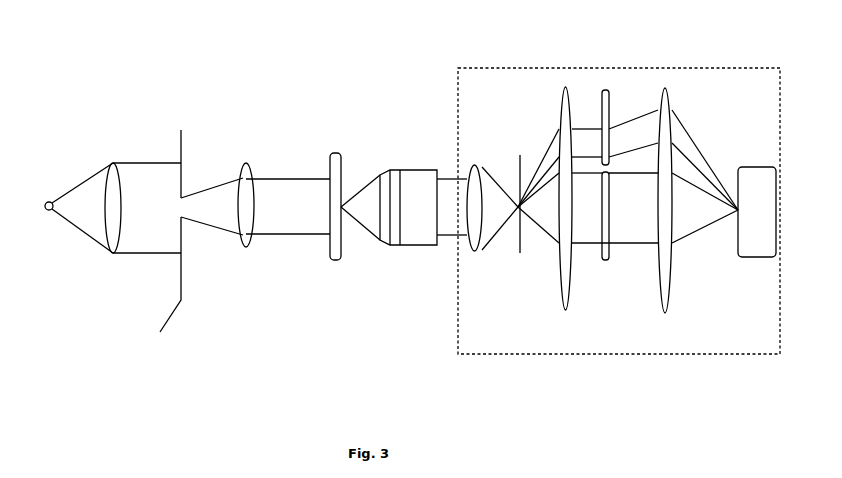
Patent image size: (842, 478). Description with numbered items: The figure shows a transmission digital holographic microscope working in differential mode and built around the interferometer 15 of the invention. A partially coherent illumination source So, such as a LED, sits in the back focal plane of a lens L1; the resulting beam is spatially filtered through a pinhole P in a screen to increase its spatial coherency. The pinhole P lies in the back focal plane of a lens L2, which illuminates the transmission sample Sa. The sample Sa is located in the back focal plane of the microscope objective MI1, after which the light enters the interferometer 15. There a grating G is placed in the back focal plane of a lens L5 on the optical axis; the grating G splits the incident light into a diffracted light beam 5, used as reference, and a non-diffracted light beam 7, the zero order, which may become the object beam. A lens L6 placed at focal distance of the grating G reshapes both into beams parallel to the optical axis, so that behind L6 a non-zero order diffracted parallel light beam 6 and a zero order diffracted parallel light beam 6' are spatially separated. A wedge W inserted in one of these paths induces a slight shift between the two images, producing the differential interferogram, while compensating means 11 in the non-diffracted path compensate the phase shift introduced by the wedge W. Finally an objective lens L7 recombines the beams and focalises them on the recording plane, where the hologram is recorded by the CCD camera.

The illumination source So is at (47, 213).
The lens L1 is at (113, 253).
The pinhole in a screen P is at (164, 244).
The lens L2 is at (246, 247).
The transmission sample or sample holder Sa is at (335, 260).
The microscope objective MI1 is at (418, 245).
The lens L5 is at (476, 165).
The grating G is at (518, 253).
The non-diffracted light beam 7 is at (540, 226).
The diffracted light beam 5 is at (547, 158).
The lens L6 is at (565, 87).
The non-zero order diffracted parallel light beam 6 is at (584, 111).
The wedge W is at (605, 92).
The objective lens L7 is at (664, 88).
The CCD camera CCD is at (757, 212).
The compensating means for compensating wedge 11 is at (605, 260).
The zero order diffracted parallel light beam 6' is at (644, 289).
The interferometer of the invention 15 is at (563, 355).